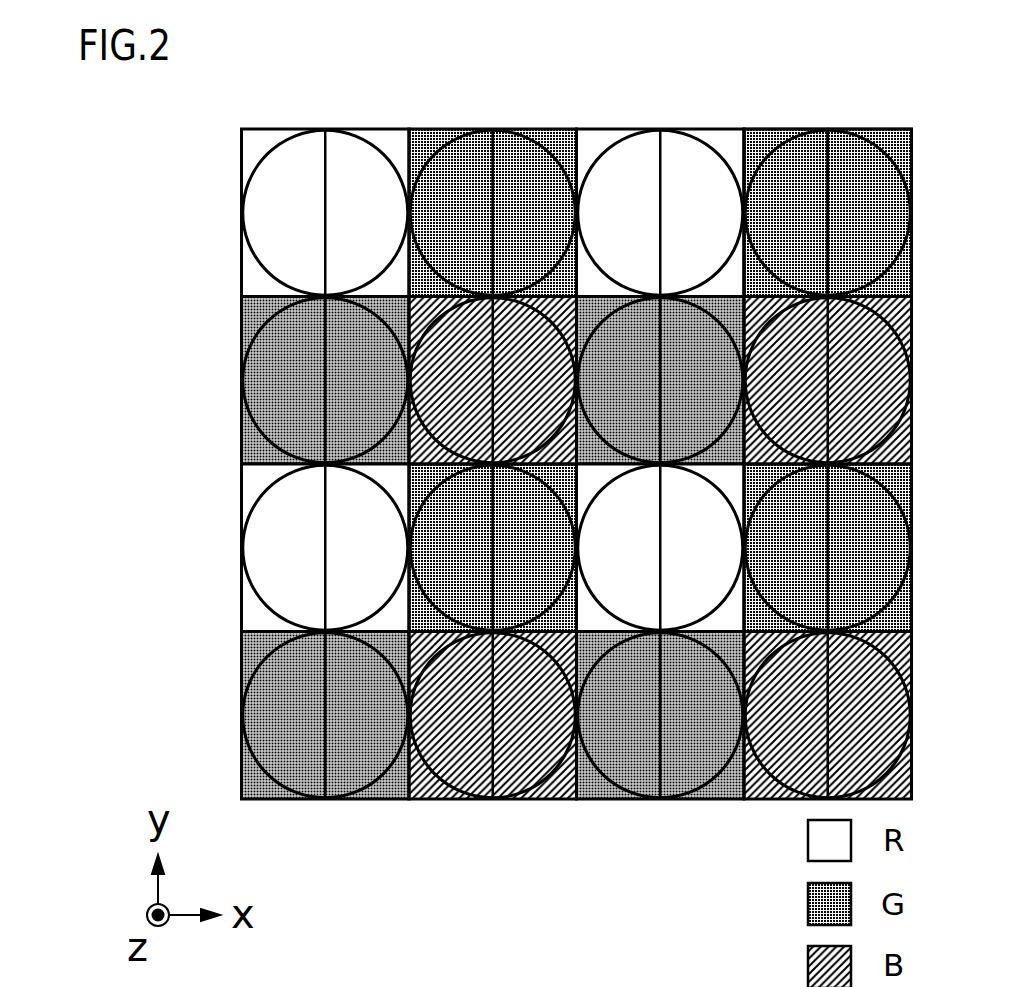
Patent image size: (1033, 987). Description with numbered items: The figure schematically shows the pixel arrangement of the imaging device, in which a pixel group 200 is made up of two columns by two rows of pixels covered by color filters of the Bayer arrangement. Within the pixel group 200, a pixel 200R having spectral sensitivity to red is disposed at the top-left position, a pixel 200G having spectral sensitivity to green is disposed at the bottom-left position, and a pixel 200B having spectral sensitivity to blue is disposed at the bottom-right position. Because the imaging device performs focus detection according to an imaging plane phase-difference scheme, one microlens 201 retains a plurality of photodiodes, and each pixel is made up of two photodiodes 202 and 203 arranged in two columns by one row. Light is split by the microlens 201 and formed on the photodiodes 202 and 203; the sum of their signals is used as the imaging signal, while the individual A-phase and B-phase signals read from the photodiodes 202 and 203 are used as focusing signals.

The pixel group 200 is at (470, 432).
The pixel having spectral sensitivity to R 200R is at (268, 181).
The pixel having spectral sensitivity to G 200G is at (255, 358).
The pixel having spectral sensitivity to B 200B is at (447, 413).
The microlens 201 is at (282, 127).
The photodiode 202 is at (788, 147).
The photodiode 203 is at (847, 145).